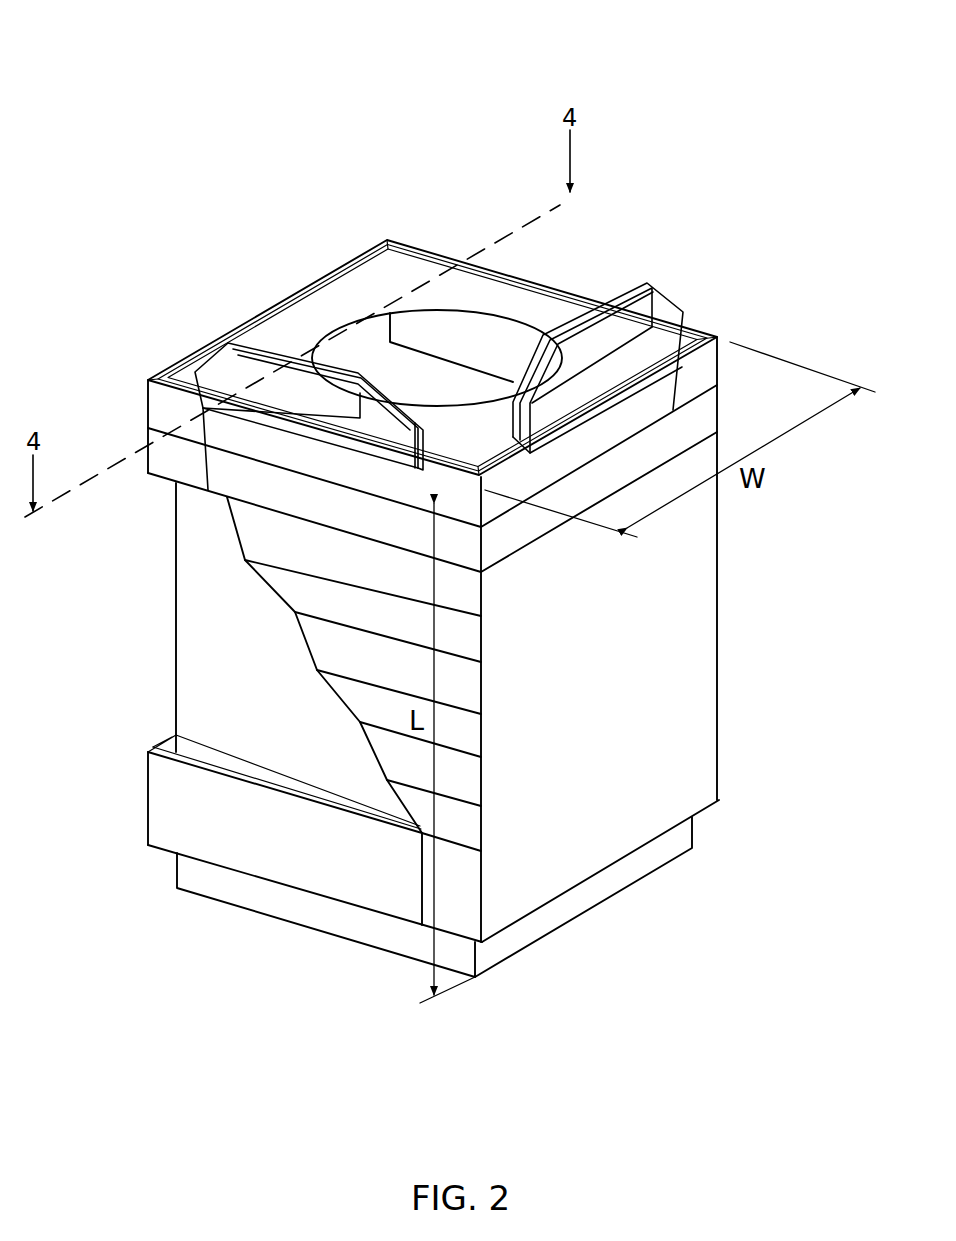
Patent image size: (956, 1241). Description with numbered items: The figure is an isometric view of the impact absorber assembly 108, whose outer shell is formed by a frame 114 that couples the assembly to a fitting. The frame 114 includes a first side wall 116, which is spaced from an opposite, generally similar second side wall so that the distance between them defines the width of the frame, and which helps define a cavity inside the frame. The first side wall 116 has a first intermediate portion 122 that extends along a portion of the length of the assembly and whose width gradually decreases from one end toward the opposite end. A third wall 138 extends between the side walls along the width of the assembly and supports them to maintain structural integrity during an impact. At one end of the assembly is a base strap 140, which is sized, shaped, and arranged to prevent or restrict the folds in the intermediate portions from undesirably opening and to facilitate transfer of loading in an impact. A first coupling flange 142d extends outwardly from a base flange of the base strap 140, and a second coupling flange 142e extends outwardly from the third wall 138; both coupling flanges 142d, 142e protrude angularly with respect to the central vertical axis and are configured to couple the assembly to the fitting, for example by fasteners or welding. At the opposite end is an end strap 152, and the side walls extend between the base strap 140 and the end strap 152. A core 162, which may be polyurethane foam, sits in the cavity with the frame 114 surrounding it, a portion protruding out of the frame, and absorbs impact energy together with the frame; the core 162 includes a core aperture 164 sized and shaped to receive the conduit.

The impact absorber assembly 108 is at (243, 126).
The frame 114 is at (413, 242).
The first side wall 116 is at (305, 644).
The first intermediate portion 122 is at (462, 777).
The third wall 138 is at (685, 650).
The base strap 140 is at (150, 468).
The first coupling flange 142d is at (268, 347).
The second coupling flange 142e is at (640, 284).
The end strap 152 is at (168, 805).
The core 162 is at (597, 907).
The core aperture 164 is at (480, 352).